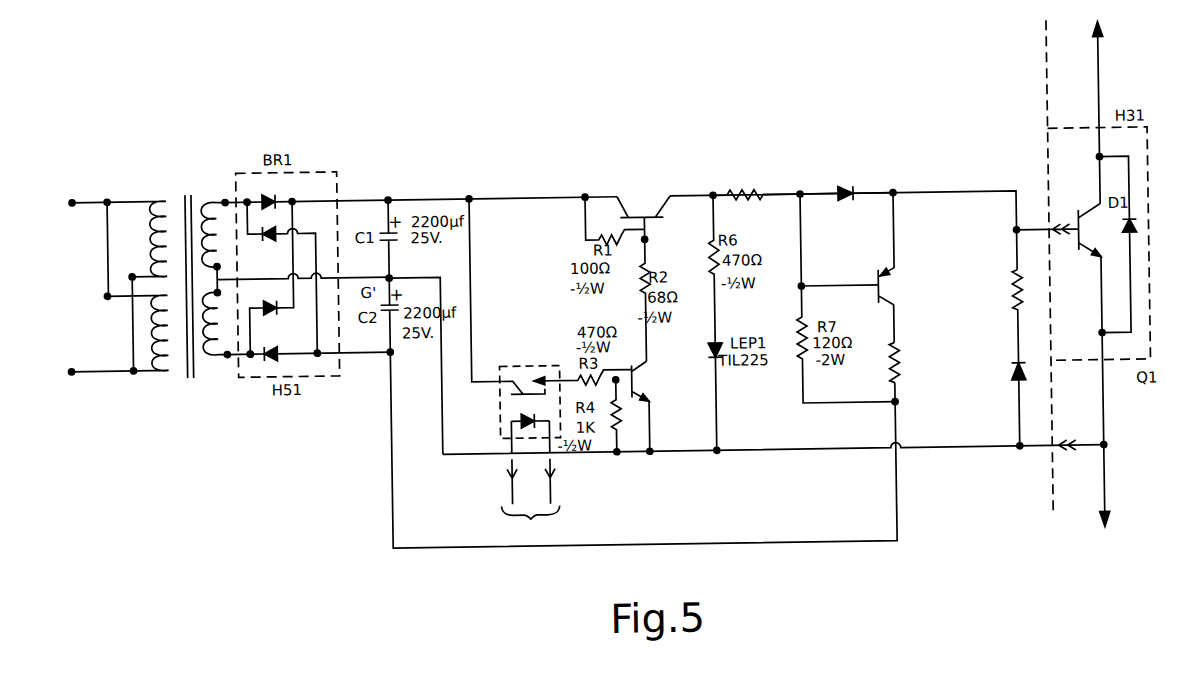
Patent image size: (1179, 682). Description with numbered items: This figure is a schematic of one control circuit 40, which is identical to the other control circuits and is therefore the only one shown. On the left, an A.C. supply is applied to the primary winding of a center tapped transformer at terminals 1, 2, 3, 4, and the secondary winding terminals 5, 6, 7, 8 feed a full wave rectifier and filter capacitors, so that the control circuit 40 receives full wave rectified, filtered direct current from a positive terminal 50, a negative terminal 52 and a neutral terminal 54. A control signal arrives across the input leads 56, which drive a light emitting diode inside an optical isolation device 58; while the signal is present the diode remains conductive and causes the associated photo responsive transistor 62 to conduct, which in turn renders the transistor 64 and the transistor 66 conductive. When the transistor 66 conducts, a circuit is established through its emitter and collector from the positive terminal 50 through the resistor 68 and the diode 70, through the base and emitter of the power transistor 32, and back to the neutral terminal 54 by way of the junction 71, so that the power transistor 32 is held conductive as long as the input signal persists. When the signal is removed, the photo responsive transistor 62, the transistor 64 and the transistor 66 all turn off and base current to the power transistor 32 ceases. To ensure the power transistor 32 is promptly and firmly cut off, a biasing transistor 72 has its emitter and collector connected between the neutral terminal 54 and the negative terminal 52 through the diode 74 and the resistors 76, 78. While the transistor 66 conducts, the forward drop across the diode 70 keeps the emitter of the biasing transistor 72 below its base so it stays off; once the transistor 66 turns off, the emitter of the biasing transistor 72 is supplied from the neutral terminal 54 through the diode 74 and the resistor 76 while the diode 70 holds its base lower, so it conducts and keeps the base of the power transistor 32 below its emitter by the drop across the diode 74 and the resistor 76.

The primary winding terminal 1 is at (90, 191).
The primary winding terminal 2 is at (132, 267).
The primary winding terminal 3 is at (97, 295).
The primary winding terminal 4 is at (105, 385).
The secondary winding terminal 5 is at (221, 192).
The secondary winding terminal 6 is at (223, 267).
The secondary winding terminal 7 is at (223, 294).
The secondary winding terminal 8 is at (223, 367).
The power transistor 32 is at (1112, 249).
The control circuit 40 is at (511, 151).
The positive terminal 50 is at (393, 198).
The negative terminal 52 is at (396, 355).
The neutral terminal 54 is at (393, 275).
The input leads 56 is at (530, 500).
The optical isolation device 58 is at (466, 428).
The photo responsive transistor 62 is at (536, 368).
The transistor 64 is at (648, 370).
The transistor 66 is at (626, 212).
The resistor 68 is at (762, 192).
The diode 70 is at (841, 183).
The junction 71 is at (1104, 455).
The biasing transistor 72 is at (888, 295).
The diode 74 is at (1013, 366).
The resistor 76 is at (1013, 296).
The resistor 78 is at (890, 374).